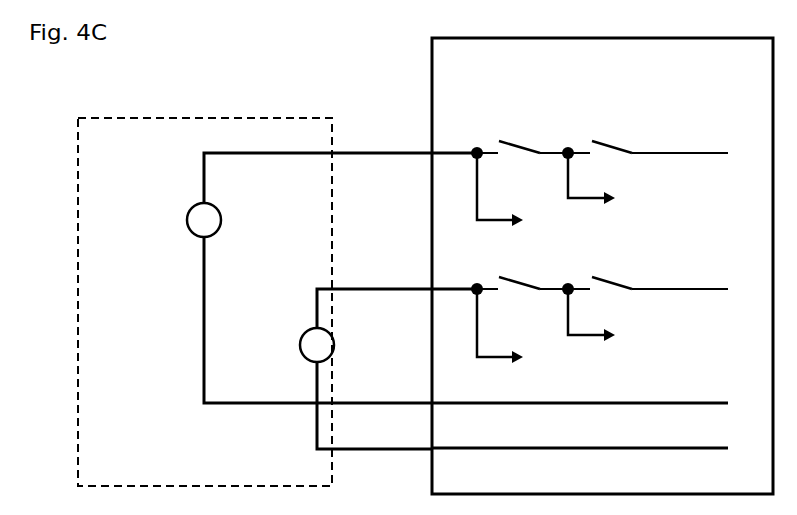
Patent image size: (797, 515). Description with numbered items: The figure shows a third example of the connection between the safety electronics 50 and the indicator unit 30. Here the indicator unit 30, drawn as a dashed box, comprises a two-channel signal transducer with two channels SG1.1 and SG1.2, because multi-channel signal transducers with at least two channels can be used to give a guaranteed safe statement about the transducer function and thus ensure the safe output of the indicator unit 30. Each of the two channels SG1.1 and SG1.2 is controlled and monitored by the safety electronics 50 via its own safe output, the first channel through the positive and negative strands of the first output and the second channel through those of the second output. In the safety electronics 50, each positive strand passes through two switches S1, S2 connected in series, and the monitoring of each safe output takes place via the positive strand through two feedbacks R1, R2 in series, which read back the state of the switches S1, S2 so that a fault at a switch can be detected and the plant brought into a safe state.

The indicator unit 30 is at (70, 185).
The safety electronics 50 is at (572, 266).
The first channel of the two-channel signal transducer SG1.1 is at (267, 278).
The second channel of the two-channel signal transducer SG1.2 is at (324, 369).
The first switch S1 is at (522, 199).
The second switch S2 is at (648, 199).
The first feedback R1 is at (522, 262).
The second feedback R2 is at (613, 251).